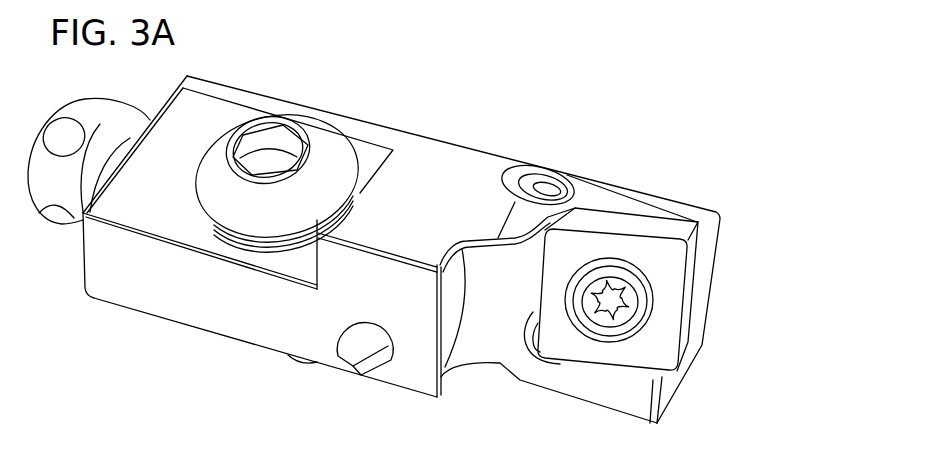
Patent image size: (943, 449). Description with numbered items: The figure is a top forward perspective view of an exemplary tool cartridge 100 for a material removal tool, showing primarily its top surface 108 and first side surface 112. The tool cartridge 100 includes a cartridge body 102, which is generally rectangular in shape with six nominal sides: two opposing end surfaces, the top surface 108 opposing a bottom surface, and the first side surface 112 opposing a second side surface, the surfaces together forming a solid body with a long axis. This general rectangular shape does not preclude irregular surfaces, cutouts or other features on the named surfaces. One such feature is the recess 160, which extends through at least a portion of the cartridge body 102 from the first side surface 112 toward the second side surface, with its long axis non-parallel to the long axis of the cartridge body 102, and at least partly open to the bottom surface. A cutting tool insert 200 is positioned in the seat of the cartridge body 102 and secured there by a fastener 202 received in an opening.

The tool cartridge 100 is at (406, 251).
The cartridge body 102 is at (438, 221).
The top surface 108 is at (446, 174).
The first side surface 112 is at (172, 272).
The recess 160 is at (357, 340).
The cutting tool insert 200 is at (650, 353).
The fastener 202 is at (610, 293).